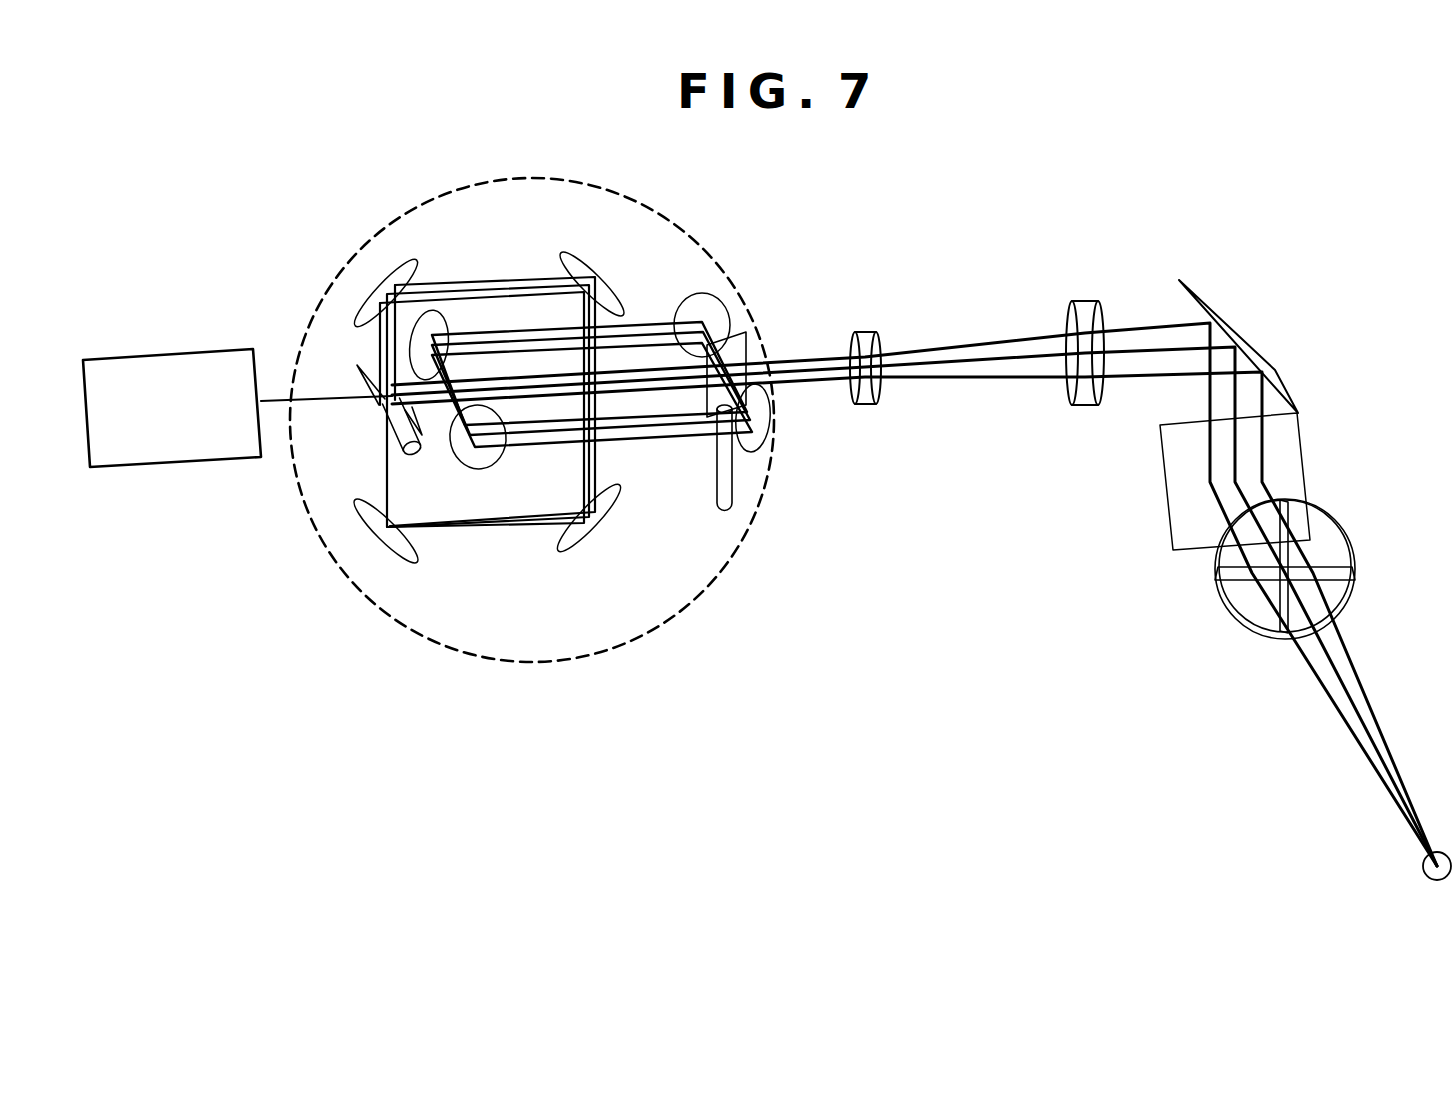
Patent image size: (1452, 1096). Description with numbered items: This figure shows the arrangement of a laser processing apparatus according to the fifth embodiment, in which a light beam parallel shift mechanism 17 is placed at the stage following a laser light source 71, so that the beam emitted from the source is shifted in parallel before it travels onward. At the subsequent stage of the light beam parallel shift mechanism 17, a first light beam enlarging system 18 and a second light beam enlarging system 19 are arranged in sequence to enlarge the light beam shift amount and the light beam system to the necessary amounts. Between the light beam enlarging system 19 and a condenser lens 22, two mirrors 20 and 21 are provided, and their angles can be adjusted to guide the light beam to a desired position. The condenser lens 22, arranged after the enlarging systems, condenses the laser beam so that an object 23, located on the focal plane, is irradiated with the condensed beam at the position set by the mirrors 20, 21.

The laser light source 71 is at (220, 348).
The light beam parallel shift mechanism 17 is at (462, 186).
The light beam enlarging system 18 is at (861, 332).
The light beam enlarging system 19 is at (1088, 302).
The mirror 20 is at (1203, 304).
The mirror 21 is at (1305, 452).
The condenser lens 22 is at (1352, 533).
The object 23 is at (1423, 866).